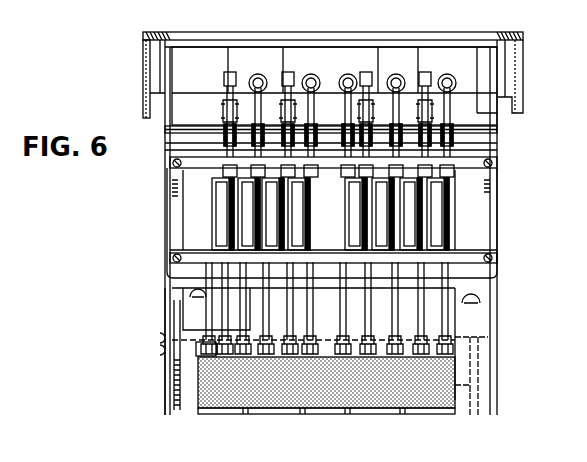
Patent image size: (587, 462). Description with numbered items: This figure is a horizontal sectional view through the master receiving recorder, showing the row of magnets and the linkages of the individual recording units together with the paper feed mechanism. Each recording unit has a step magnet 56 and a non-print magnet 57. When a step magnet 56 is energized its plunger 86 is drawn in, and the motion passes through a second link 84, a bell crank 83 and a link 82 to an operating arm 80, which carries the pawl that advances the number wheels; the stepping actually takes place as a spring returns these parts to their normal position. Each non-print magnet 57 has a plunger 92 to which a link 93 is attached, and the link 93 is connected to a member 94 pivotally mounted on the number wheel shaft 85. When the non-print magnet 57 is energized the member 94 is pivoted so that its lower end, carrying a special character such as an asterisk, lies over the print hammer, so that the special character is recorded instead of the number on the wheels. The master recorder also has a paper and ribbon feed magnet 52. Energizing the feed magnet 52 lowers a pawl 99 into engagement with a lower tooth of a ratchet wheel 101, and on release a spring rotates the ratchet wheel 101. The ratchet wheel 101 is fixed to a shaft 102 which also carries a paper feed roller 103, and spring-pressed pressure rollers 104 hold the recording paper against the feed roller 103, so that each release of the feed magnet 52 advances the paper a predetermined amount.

The step magnet 56 is at (402, 57).
The second link 84 is at (226, 97).
The plunger 86 is at (224, 116).
The bell crank 83 is at (462, 121).
The link 82 is at (314, 183).
The non-print magnet 57 is at (355, 222).
The plunger 92 is at (215, 273).
The link 93 is at (221, 305).
The number wheel shaft 85 is at (318, 312).
The pawl 99 is at (200, 356).
The master paper and ribbon feed magnet 52 is at (258, 379).
The operating arm 80 is at (297, 356).
The member 94 is at (407, 347).
The shaft 102 is at (180, 400).
The ratchet wheel 101 is at (192, 410).
The pressure rollers 104 is at (288, 414).
The paper feed roller 103 is at (320, 414).